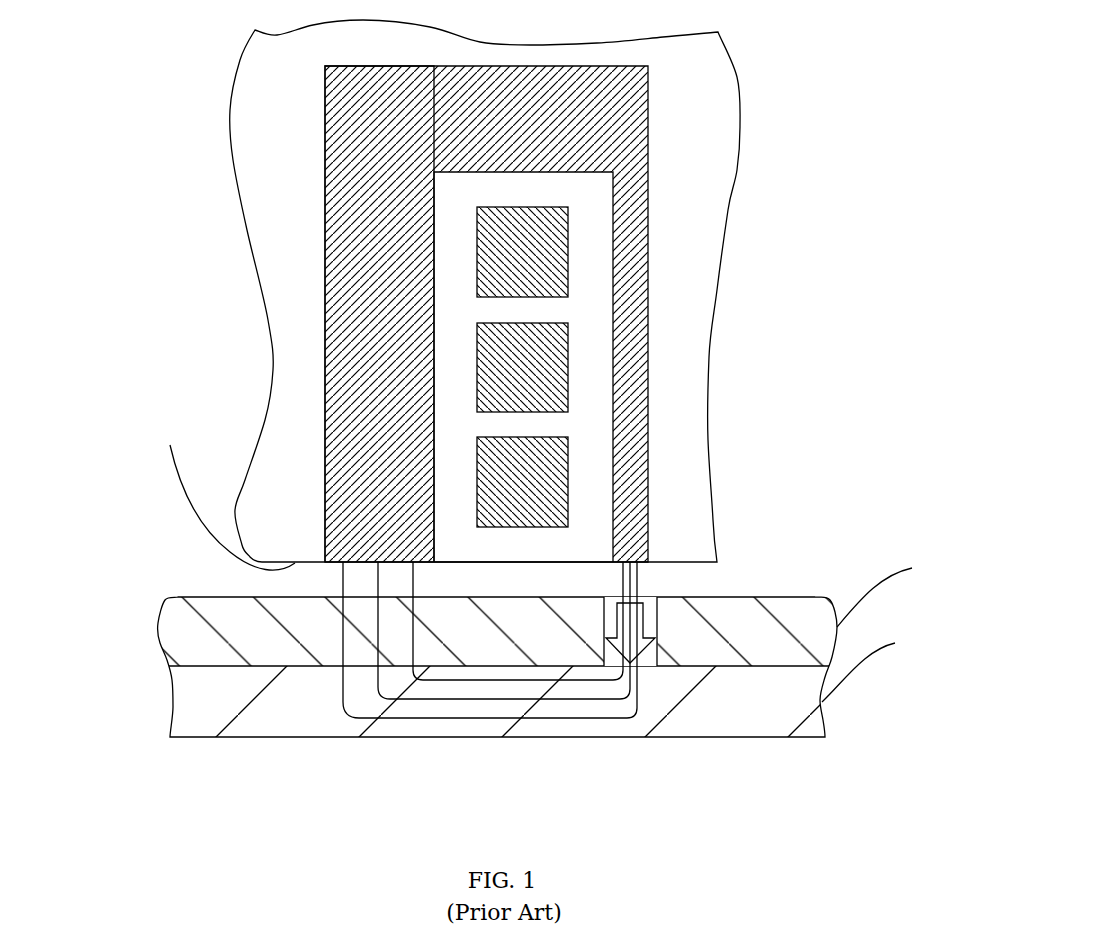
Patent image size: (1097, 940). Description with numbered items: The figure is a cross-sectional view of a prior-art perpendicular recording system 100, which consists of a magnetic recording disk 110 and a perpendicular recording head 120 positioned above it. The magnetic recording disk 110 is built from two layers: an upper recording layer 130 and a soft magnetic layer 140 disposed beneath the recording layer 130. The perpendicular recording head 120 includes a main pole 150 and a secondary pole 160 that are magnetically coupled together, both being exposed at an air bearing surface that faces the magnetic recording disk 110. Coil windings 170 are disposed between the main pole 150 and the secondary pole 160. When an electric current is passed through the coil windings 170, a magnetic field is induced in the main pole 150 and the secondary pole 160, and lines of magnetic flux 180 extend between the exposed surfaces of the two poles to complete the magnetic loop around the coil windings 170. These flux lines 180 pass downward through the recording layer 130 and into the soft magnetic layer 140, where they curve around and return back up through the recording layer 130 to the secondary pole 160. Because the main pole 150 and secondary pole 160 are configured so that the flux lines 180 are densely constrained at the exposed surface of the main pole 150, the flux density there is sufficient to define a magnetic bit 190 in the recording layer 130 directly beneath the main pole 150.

The perpendicular recording system 100 is at (155, 243).
The magnetic recording disk 110 is at (772, 597).
The perpendicular recording head 120 is at (738, 127).
The recording layer 130 is at (547, 609).
The soft magnetic layer 140 is at (540, 681).
The main pole 150 is at (648, 402).
The secondary pole 160 is at (323, 437).
The coil windings 170 is at (568, 260).
The lines of magnetic flux 180 is at (343, 582).
The magnetic bit 190 is at (653, 597).